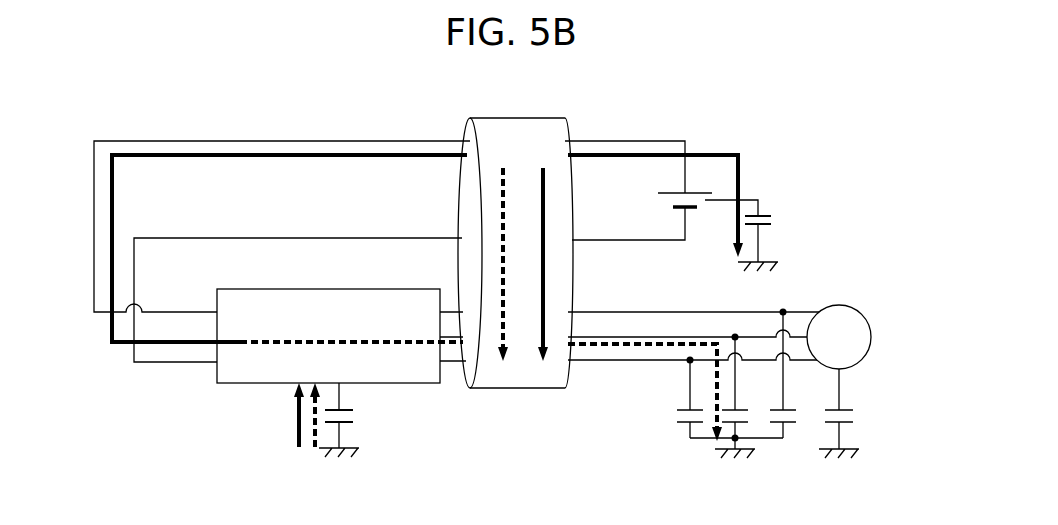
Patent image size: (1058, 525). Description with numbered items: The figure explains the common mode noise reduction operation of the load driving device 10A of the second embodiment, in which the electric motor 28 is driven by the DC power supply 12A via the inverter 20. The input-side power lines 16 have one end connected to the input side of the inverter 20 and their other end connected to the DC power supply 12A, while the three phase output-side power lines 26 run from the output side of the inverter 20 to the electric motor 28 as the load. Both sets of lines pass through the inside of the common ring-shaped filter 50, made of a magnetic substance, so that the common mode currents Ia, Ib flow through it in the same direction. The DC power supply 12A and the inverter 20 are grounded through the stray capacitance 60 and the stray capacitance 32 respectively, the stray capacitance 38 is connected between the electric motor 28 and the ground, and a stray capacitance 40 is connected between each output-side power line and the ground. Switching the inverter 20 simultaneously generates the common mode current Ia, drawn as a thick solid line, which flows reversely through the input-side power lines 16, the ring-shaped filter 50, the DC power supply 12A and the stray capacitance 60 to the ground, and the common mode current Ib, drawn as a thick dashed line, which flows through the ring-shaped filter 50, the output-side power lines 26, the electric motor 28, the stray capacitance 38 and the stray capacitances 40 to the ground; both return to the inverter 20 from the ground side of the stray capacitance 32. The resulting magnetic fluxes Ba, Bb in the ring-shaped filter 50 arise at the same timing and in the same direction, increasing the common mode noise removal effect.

The load driving device 10A is at (592, 91).
The DC power supply 12A is at (663, 202).
The input-side power lines 16 is at (167, 368).
The inverter 20 is at (267, 288).
The output-side power lines 26 is at (594, 368).
The electric motor 28 is at (843, 306).
The stray capacitance 32 is at (349, 419).
The stray capacitance 38 is at (855, 414).
The stray capacitances 40 is at (677, 417).
The ring-shaped filter 50 is at (496, 117).
The stray capacitance 60 is at (773, 220).
The common mode current Ia is at (122, 346).
The common mode current Ib is at (318, 432).
The magnetic flux Ba is at (545, 217).
The magnetic flux Bb is at (500, 262).